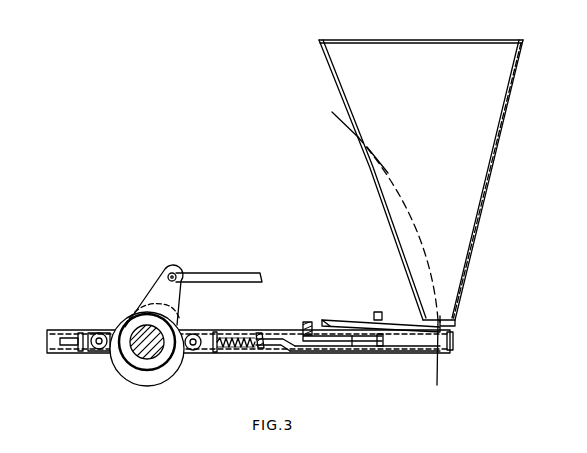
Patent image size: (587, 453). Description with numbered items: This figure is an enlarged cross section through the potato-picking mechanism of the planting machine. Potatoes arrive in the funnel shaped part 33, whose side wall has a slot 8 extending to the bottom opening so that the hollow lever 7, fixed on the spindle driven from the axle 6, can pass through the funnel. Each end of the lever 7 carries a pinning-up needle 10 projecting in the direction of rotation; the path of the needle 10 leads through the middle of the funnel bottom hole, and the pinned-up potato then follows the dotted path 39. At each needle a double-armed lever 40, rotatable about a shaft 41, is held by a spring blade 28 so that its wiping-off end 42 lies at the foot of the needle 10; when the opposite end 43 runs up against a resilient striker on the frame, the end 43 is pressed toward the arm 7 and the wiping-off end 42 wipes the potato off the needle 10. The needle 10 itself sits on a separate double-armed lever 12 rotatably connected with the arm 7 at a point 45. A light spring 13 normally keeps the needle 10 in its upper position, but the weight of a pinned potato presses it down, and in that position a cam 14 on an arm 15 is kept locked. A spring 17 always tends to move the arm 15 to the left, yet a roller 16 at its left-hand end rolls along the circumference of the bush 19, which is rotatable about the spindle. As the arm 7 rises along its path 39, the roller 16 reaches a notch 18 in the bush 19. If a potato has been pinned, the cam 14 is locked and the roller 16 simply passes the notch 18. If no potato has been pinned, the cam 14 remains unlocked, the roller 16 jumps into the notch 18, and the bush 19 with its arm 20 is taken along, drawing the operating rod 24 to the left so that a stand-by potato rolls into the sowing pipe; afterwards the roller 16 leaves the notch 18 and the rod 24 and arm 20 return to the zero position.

The axle 6 is at (147, 356).
The lever 7 is at (278, 355).
The slot 8 is at (383, 222).
The pinning-up needle 10 is at (450, 318).
The double-armed lever 12 is at (310, 345).
The spring 13 is at (303, 323).
The cam 14 is at (453, 345).
The arm 15 is at (337, 355).
The roller 16 is at (200, 362).
The spring 17 is at (237, 355).
The notch 18 is at (184, 317).
The bush 19 is at (122, 320).
The arm 20 is at (161, 288).
The operating rod 24 is at (238, 274).
The spring blade 28 is at (352, 348).
The funnel shaped part 33 is at (470, 197).
The path 39 is at (380, 168).
The double-armed lever 40 is at (365, 322).
The shaft 41 is at (384, 318).
The wiping-off end 42 is at (426, 350).
The end 43 is at (335, 321).
The point 45 is at (381, 348).